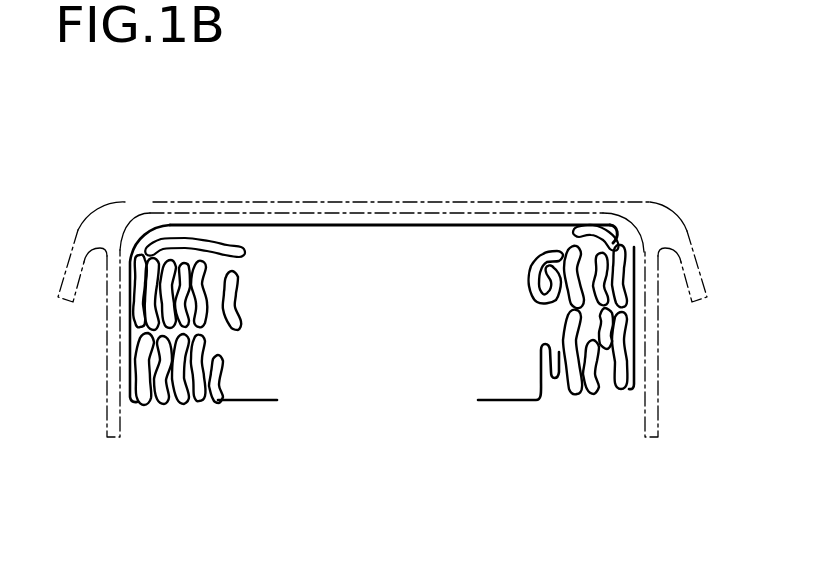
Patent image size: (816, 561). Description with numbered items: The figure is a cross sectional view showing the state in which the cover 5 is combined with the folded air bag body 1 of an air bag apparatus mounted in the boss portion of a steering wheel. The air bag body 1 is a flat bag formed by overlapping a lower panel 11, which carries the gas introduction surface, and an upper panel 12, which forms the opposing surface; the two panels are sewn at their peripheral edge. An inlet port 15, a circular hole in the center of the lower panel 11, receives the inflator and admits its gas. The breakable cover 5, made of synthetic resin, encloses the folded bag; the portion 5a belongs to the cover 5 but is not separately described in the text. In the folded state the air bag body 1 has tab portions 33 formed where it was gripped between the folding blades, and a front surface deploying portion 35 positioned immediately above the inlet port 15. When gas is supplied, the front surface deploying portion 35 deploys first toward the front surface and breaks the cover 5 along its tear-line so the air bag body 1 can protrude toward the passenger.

The air bag body 1 is at (579, 406).
The cover 5 is at (552, 199).
The inner surface of housing 5a is at (380, 213).
The lower panel 11 is at (272, 401).
The upper panel 12 is at (290, 224).
The inlet port 15 is at (478, 400).
The tab portions 33 is at (130, 396).
The front surface deploying portion 35 is at (219, 226).